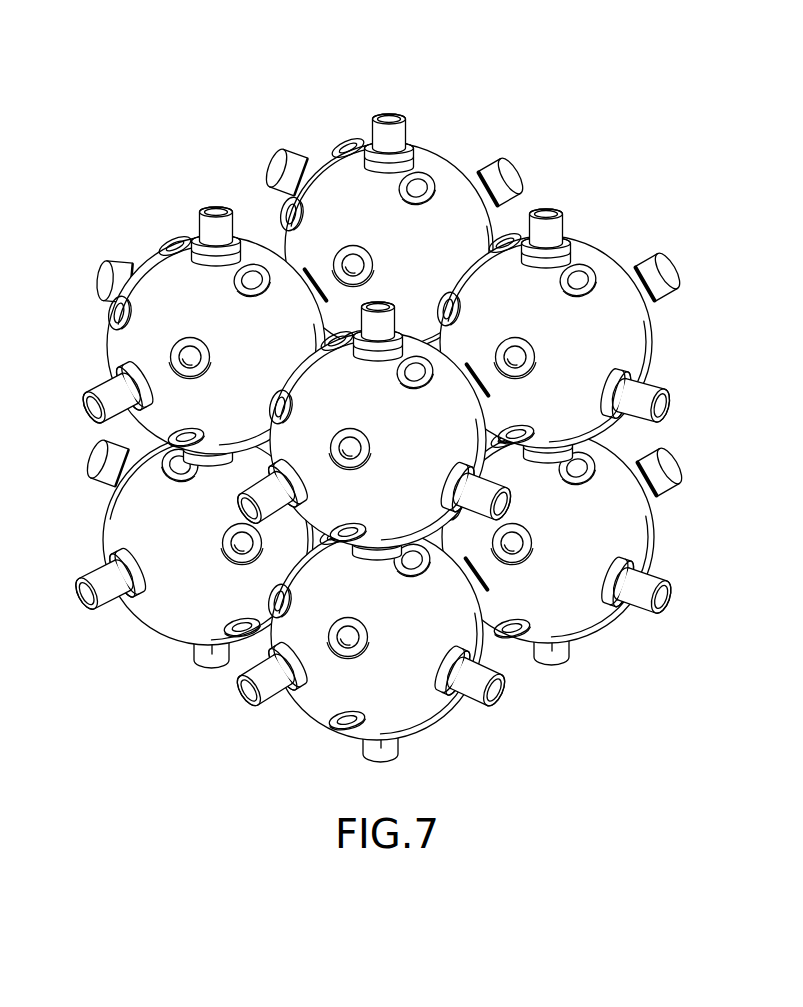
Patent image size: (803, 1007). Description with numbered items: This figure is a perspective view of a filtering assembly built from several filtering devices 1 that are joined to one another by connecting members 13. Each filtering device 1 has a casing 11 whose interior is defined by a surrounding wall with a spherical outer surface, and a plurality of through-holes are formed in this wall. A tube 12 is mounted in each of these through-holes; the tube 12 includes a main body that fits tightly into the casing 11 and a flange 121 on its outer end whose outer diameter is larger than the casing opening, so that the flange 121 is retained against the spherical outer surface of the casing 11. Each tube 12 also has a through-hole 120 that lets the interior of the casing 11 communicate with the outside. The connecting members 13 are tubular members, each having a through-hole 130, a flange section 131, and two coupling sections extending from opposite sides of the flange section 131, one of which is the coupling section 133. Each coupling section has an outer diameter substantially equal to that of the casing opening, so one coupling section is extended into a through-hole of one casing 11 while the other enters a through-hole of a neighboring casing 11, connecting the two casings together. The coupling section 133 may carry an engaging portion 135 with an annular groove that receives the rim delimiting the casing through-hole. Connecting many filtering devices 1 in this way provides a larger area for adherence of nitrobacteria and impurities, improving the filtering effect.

The filtering device 1 is at (367, 414).
The casing 11 is at (455, 175).
The tube 12 is at (184, 201).
The through-hole 120 is at (345, 143).
The flange 121 is at (344, 156).
The connecting member 13 is at (367, 388).
The through-hole 130 is at (378, 122).
The flange section 131 is at (240, 243).
The coupling section 133 is at (365, 147).
The engaging portion 135 is at (403, 147).